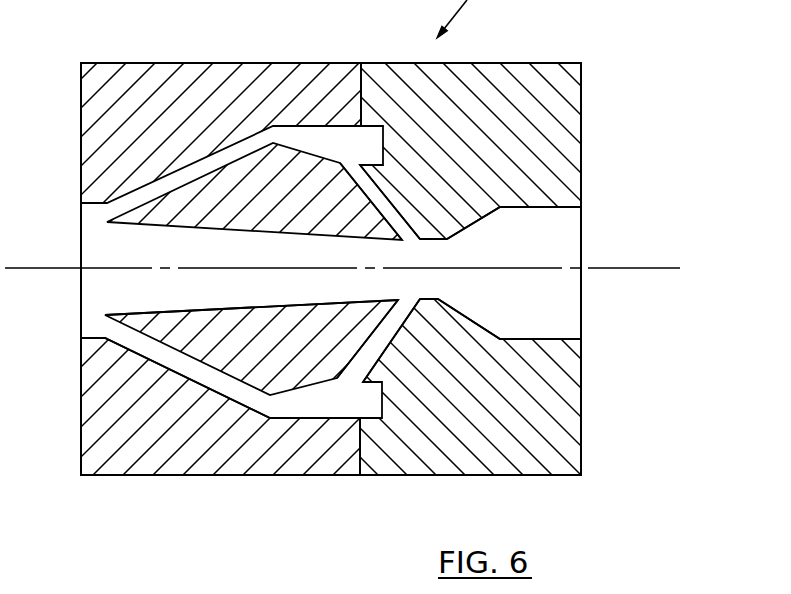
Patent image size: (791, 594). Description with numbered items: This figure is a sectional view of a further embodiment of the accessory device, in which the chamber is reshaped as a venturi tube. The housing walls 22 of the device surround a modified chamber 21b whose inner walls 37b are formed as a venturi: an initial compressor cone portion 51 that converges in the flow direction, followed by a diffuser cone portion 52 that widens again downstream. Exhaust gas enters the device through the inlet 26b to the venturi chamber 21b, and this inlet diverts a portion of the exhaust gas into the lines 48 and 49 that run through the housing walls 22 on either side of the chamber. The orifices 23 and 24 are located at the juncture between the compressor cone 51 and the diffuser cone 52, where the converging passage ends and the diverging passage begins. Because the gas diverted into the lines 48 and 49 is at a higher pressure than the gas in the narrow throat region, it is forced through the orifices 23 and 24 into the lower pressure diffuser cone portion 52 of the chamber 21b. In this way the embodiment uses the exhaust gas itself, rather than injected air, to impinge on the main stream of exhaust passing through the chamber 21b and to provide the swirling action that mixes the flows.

The housing walls 22 is at (118, 465).
The modified chamber 21b is at (556, 314).
The line 48 is at (217, 157).
The line 49 is at (242, 395).
The orifice 23 is at (407, 232).
The orifice 24 is at (409, 305).
The diffuser cone portion 52 is at (472, 313).
The inner walls 37b is at (213, 296).
The compressor cone portion 51 is at (307, 305).
The inlet 26b is at (105, 297).